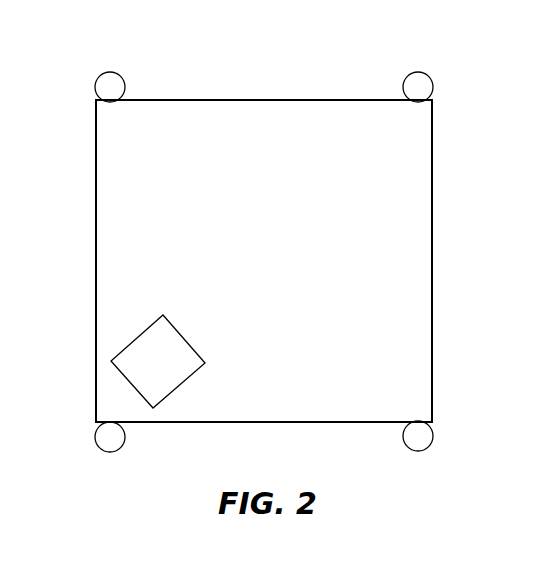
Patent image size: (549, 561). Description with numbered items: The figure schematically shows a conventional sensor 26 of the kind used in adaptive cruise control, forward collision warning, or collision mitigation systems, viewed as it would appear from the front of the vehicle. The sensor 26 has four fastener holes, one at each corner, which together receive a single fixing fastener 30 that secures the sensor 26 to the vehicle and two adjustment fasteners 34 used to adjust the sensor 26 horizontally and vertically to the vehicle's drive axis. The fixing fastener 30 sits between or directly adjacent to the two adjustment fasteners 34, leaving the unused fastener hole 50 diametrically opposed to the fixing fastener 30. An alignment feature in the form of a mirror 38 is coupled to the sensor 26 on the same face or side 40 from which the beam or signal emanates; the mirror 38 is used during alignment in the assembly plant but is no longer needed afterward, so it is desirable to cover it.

The sensor 26 is at (289, 70).
The fixing fastener 30 is at (427, 75).
The adjustment fasteners 34 is at (121, 76).
The mirror 38 is at (140, 352).
The face or side 40 is at (277, 272).
The unused fastener hole 50 is at (103, 450).